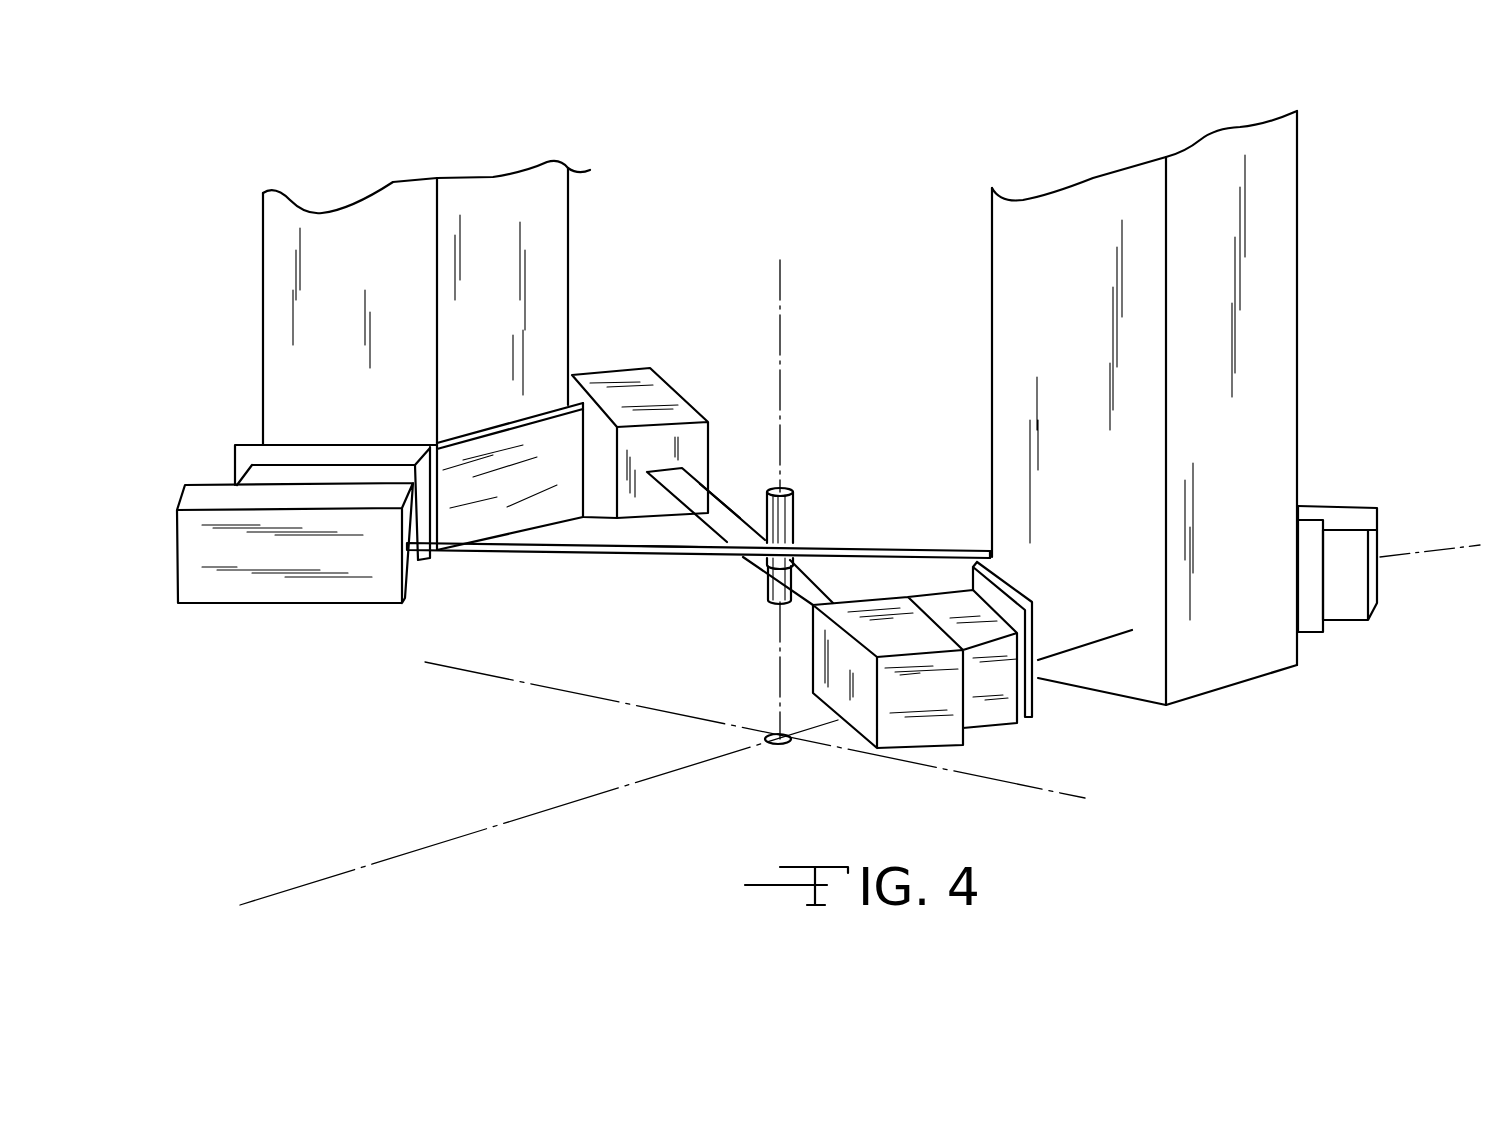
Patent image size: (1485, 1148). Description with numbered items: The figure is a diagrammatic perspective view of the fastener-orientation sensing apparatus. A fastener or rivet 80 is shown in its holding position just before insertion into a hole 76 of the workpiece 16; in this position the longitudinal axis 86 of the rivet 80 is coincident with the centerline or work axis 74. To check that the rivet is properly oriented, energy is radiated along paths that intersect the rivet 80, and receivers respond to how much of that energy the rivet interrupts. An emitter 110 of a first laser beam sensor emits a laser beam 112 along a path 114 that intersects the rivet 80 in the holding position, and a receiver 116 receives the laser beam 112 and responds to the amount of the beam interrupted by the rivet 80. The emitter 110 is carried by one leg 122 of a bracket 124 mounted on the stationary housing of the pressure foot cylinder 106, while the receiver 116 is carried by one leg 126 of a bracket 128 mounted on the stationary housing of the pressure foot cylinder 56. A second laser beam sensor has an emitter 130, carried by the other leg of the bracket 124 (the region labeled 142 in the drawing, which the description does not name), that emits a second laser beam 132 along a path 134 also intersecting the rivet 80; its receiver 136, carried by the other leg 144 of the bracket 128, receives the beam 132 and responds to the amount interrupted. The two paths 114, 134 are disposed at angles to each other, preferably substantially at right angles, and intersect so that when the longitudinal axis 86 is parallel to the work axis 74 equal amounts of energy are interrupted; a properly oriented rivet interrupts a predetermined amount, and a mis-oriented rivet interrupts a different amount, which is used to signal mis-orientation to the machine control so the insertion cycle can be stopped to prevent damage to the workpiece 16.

The workpiece 16 is at (727, 765).
The pressure foot cylinder 56 is at (1277, 222).
The work axis 74 is at (778, 670).
The hole 76 is at (783, 745).
The rivet 80 is at (795, 524).
The longitudinal axis 86 is at (782, 480).
The pressure foot cylinder 106 is at (470, 197).
The emitter 110 is at (280, 603).
The laser beam 112 is at (583, 551).
The path 114 is at (667, 555).
The receiver 116 is at (1342, 515).
The leg 122 is at (318, 458).
The bracket 124 is at (495, 452).
The leg 126 is at (1305, 612).
The bracket 128 is at (985, 548).
The emitter 130 is at (658, 398).
The laser beam 132 is at (703, 492).
The path 134 is at (730, 505).
The receiver 136 is at (908, 744).
The plate edge 142 is at (575, 378).
The leg 144 is at (1032, 624).